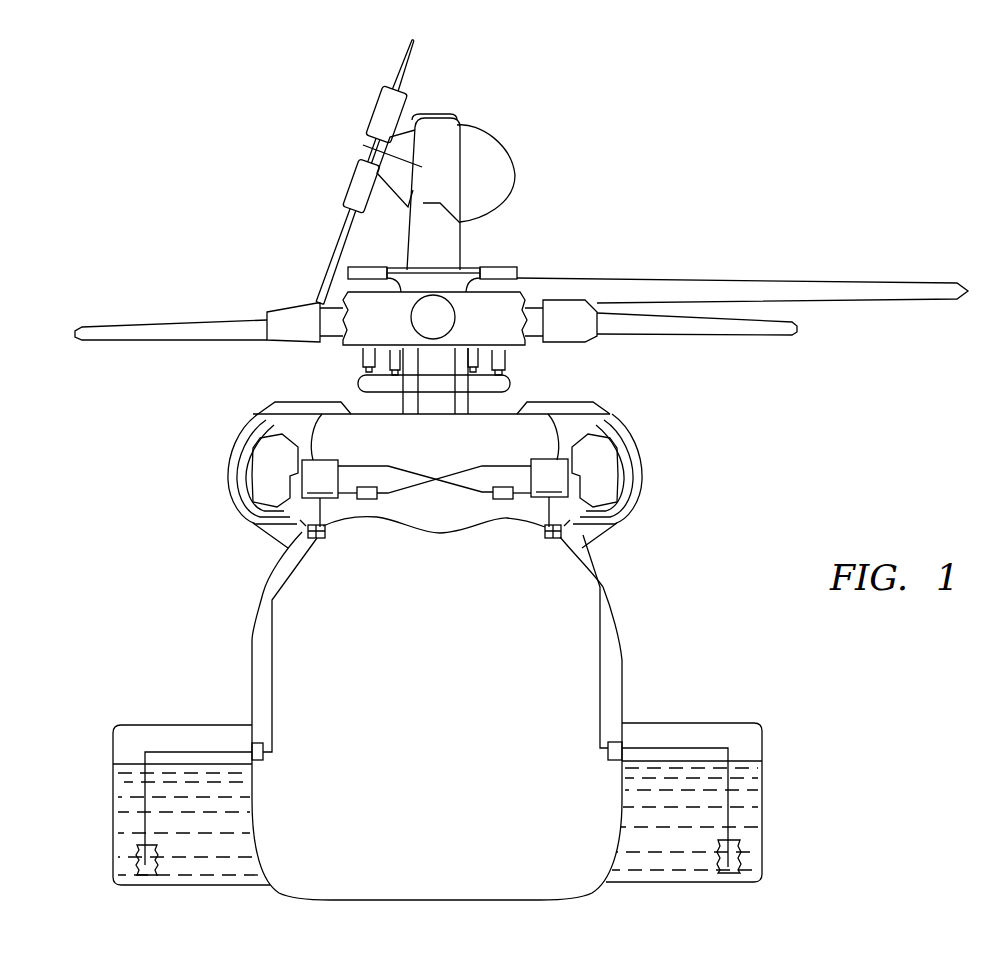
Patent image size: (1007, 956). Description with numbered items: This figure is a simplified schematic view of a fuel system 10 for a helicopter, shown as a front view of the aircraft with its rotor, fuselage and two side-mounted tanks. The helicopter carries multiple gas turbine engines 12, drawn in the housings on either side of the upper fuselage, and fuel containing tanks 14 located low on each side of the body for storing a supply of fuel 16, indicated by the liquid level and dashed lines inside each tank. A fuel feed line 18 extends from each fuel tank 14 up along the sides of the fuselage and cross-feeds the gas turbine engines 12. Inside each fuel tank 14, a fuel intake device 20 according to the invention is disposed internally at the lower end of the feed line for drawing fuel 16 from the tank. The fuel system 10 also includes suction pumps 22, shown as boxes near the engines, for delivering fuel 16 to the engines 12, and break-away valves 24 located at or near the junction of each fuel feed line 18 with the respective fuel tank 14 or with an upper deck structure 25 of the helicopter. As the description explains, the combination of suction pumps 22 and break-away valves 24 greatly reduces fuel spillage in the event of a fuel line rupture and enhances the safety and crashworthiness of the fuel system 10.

The fuel system 10 is at (677, 748).
The gas turbine engine 12 is at (262, 452).
The fuel containing tank 14 is at (112, 742).
The fuel 16 is at (127, 788).
The fuel feed line 18 is at (290, 585).
The fuel intake device 20 is at (129, 850).
The suction pump 22 is at (435, 493).
The break-away valve 24 is at (327, 532).
The upper deck structure 25 is at (298, 522).